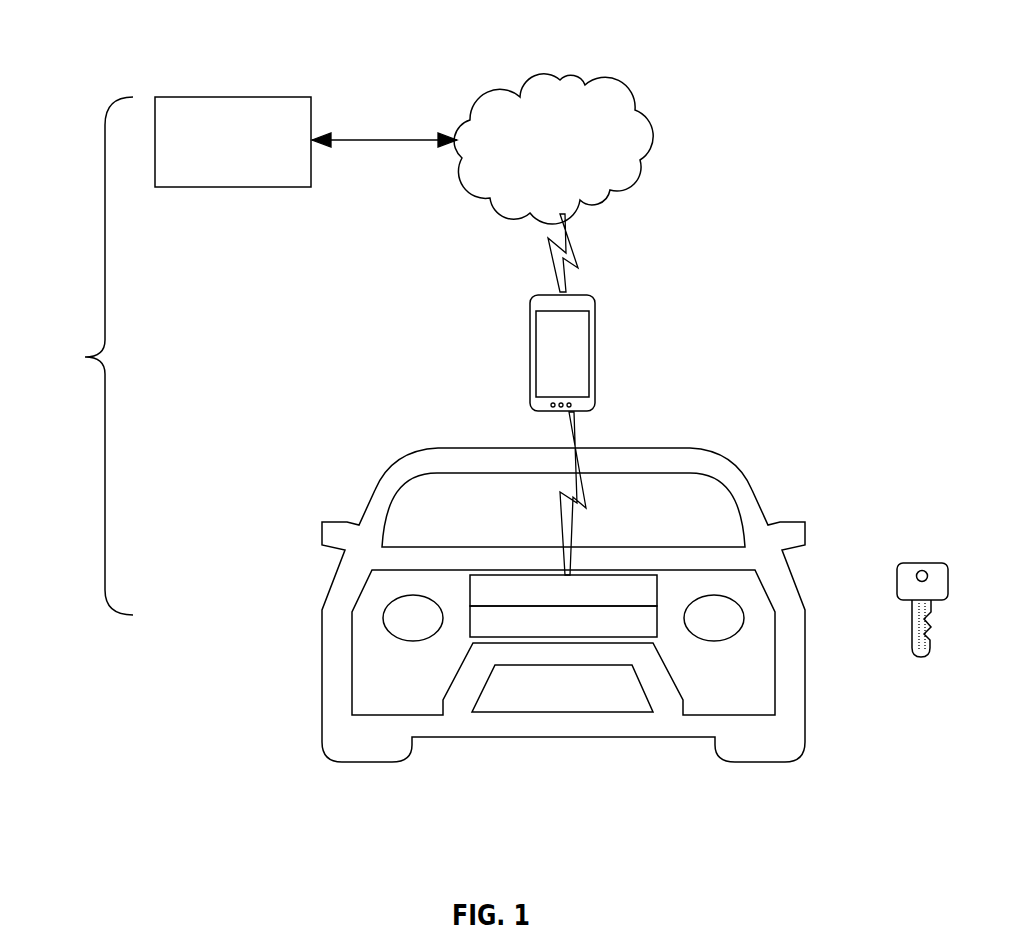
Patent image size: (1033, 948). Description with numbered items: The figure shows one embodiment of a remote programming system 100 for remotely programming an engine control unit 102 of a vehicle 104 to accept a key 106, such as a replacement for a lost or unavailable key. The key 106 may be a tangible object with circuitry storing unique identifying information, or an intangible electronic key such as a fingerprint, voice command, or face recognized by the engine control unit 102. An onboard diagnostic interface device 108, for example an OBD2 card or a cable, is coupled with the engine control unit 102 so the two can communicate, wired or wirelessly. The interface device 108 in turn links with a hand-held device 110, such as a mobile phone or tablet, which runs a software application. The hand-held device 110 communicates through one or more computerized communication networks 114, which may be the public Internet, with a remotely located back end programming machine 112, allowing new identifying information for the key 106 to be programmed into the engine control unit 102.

The remote programming system 100 is at (85, 357).
The engine control unit 102 is at (528, 637).
The vehicle 104 is at (645, 540).
The key 106 is at (922, 562).
The onboard diagnostic interface device 108 is at (538, 575).
The hand-held device 110 is at (597, 348).
The back end programming machine 112 is at (233, 97).
The computerized communication network 114 is at (600, 74).